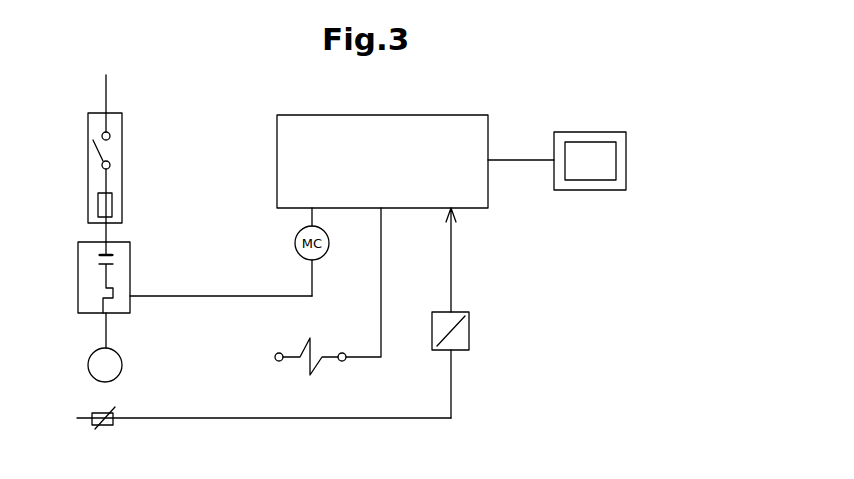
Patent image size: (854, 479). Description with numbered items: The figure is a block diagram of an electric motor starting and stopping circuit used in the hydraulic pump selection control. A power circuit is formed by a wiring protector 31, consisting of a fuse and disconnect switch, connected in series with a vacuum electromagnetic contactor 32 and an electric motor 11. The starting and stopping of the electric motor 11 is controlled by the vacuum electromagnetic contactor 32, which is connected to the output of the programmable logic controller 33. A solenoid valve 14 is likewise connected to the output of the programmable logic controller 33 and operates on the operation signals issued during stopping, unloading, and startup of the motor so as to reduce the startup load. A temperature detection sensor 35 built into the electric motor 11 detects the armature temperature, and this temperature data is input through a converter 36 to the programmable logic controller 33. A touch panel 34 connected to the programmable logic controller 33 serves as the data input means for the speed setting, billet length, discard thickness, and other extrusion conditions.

The wiring protector 31 is at (122, 165).
The vacuum electromagnetic contactor 32 is at (130, 260).
The electric motor 11 is at (122, 365).
The temperature detection sensor 35 is at (113, 421).
The programmable logic controller 33 is at (423, 115).
The touch panel 34 is at (608, 132).
The solenoid valve 14 is at (287, 350).
The converter 36 is at (469, 325).